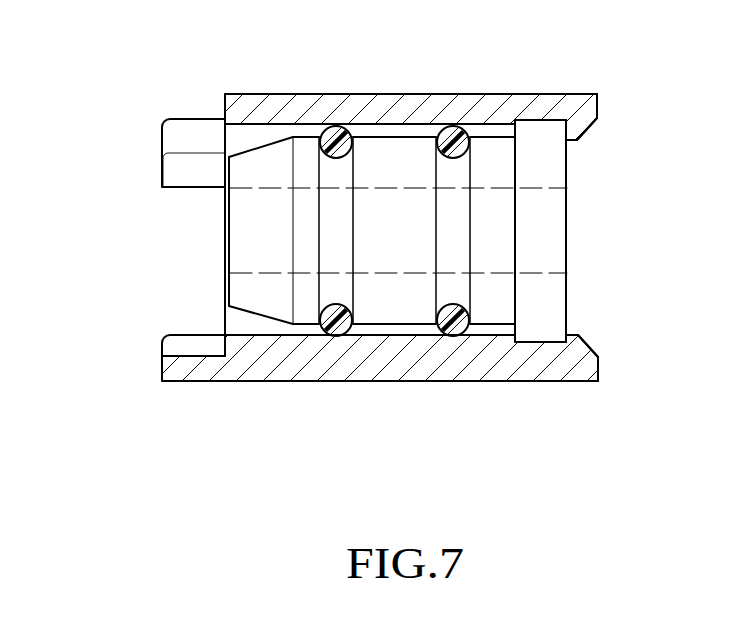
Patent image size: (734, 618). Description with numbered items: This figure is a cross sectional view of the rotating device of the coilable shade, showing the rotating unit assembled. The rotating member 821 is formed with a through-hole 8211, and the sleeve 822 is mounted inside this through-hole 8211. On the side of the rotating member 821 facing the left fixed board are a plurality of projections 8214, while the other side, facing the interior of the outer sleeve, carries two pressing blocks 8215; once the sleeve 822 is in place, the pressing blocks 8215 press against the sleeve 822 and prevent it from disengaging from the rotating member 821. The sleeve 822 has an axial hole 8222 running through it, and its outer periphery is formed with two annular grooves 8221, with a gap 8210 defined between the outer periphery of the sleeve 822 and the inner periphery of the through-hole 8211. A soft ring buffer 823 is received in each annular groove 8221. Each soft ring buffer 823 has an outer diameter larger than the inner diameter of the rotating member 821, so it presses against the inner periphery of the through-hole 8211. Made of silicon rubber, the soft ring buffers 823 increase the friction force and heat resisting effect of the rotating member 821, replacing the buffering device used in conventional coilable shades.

The rotating member 821 is at (418, 360).
The gap 8210 is at (497, 132).
The through-hole 8211 is at (257, 140).
The projections 8214 is at (182, 370).
The pressing blocks 8215 is at (577, 125).
The annular groove 8221 is at (394, 171).
The sleeve 822 is at (541, 163).
The axial hole 8222 is at (548, 237).
The soft ring buffer 823 is at (336, 138).